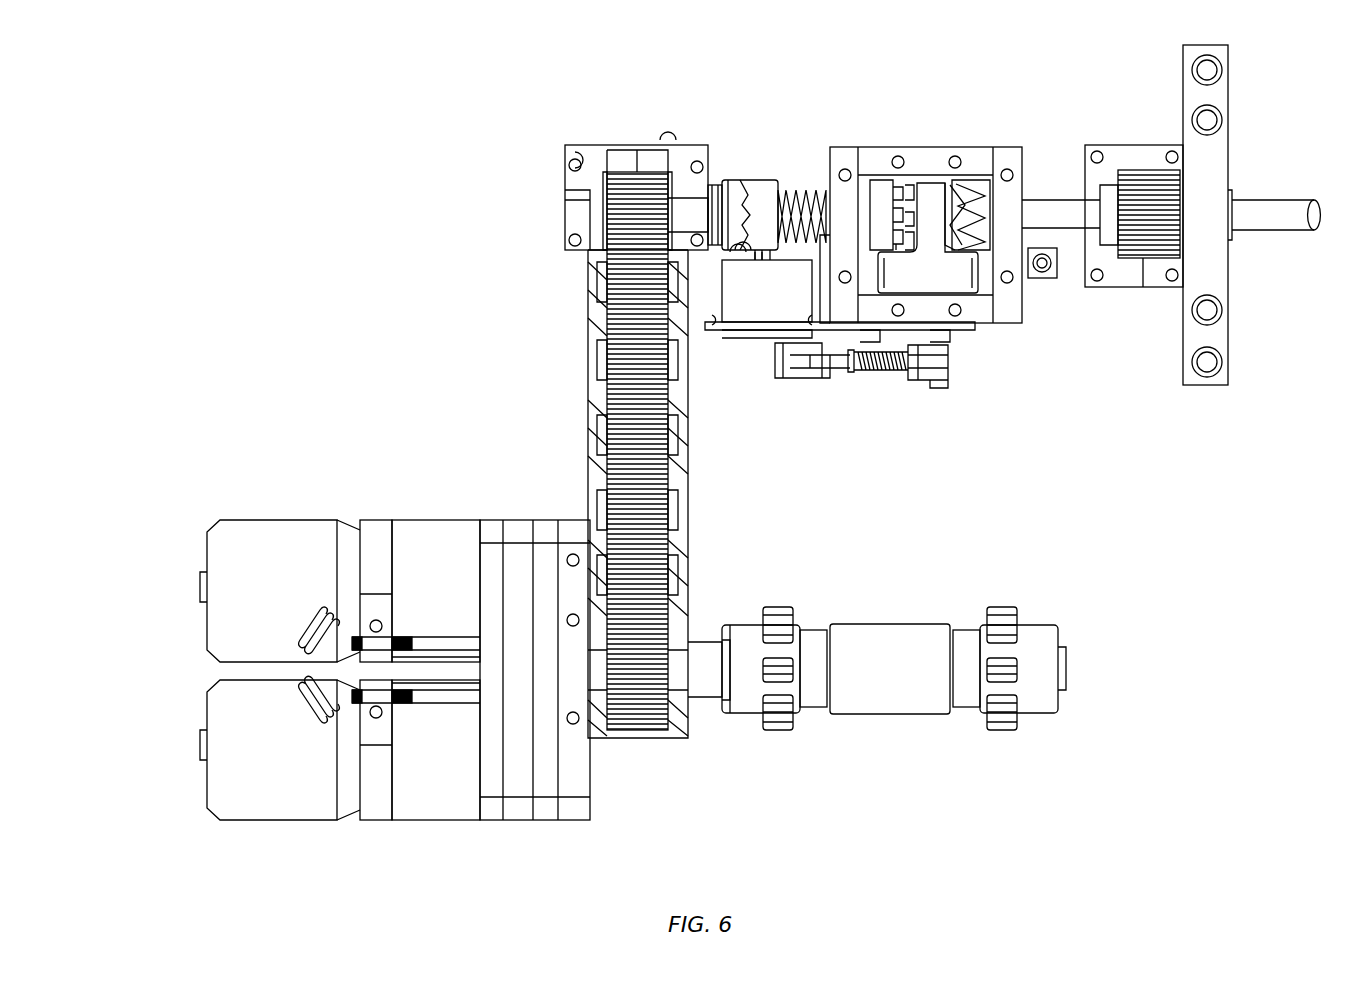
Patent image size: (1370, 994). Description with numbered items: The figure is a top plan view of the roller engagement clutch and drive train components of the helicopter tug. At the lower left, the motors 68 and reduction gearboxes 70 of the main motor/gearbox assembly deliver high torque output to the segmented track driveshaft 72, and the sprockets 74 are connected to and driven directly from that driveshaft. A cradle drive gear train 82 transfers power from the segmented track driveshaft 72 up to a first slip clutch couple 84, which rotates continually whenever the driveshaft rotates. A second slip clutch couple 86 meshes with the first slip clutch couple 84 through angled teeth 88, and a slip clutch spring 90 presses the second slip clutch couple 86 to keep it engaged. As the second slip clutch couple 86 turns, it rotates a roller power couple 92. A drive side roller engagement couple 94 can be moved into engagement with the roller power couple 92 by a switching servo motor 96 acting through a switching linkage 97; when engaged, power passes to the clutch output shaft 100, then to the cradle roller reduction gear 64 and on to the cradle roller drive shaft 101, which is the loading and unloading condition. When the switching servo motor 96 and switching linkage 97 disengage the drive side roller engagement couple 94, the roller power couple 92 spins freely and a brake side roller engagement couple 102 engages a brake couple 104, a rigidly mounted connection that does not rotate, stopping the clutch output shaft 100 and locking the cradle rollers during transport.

The cradle roller reduction gear 64 is at (1153, 186).
The motors 68 is at (256, 748).
The reduction gearboxes 70 is at (448, 598).
The segmented track driveshaft 72 is at (599, 678).
The sprockets 74 is at (994, 734).
The cradle drive gear train 82 is at (620, 657).
The first slip clutch couple 84 is at (722, 184).
The second slip clutch couple 86 is at (766, 182).
The angled teeth 88 is at (708, 198).
The slip clutch spring 90 is at (805, 183).
The roller power couple 92 is at (881, 178).
The drive side roller engagement couple 94 is at (903, 244).
The switching servo motor 96 is at (758, 300).
The switching linkage 97 is at (854, 373).
The clutch output shaft 100 is at (1064, 198).
The cradle roller drive shaft 101 is at (1278, 208).
The brake side roller engagement couple 102 is at (957, 226).
The brake couple 104 is at (977, 212).